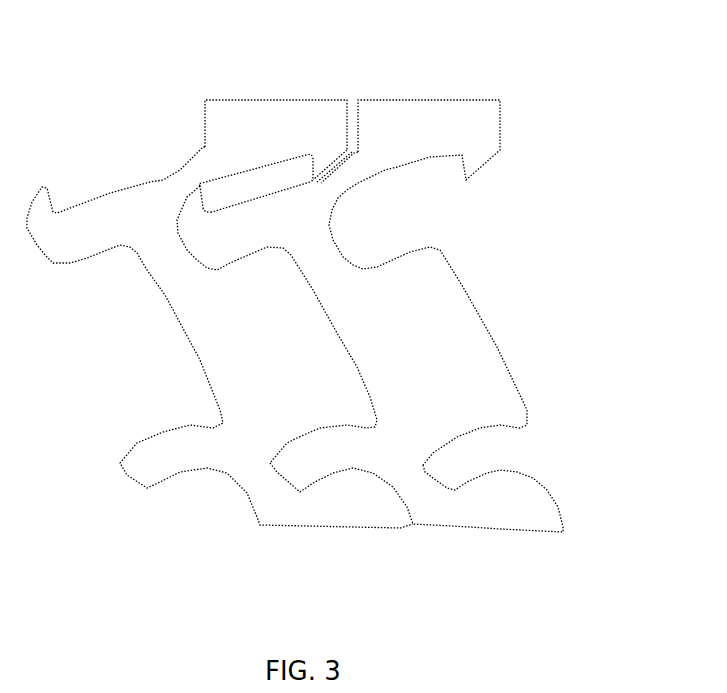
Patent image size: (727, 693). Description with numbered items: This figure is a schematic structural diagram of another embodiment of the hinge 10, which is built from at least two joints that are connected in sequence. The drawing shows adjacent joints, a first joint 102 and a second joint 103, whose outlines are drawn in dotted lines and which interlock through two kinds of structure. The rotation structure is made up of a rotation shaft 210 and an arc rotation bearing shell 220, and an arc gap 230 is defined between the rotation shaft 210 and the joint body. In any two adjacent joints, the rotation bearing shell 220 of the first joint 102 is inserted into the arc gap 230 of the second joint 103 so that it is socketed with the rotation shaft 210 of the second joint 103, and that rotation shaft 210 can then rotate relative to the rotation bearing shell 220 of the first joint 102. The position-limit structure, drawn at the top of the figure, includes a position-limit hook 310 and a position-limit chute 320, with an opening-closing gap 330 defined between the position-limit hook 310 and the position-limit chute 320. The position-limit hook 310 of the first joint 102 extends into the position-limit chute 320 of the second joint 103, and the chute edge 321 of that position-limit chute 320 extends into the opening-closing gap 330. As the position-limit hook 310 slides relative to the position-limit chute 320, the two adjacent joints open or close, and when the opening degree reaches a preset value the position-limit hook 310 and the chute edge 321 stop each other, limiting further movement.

The hinge 10 is at (498, 77).
The first joint 102 is at (463, 375).
The second joint 103 is at (238, 397).
The rotation shaft 210 is at (368, 503).
The arc rotation bearing shell 220 is at (297, 460).
The arc gap 230 is at (460, 452).
The position-limit hook 310 is at (218, 235).
The position-limit chute 320 is at (287, 140).
The chute edge 321 is at (329, 163).
The opening-closing gap 330 is at (247, 182).